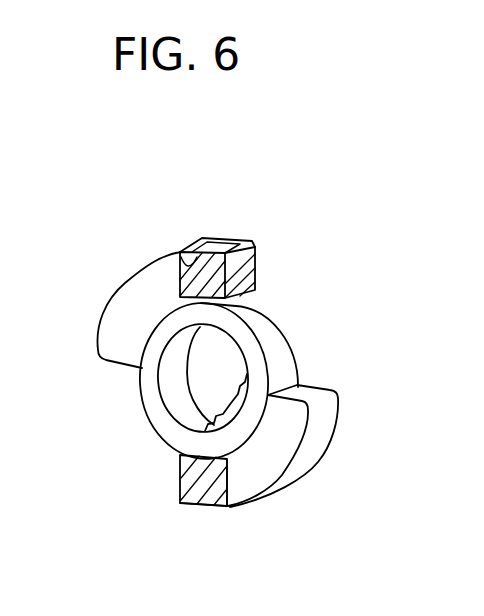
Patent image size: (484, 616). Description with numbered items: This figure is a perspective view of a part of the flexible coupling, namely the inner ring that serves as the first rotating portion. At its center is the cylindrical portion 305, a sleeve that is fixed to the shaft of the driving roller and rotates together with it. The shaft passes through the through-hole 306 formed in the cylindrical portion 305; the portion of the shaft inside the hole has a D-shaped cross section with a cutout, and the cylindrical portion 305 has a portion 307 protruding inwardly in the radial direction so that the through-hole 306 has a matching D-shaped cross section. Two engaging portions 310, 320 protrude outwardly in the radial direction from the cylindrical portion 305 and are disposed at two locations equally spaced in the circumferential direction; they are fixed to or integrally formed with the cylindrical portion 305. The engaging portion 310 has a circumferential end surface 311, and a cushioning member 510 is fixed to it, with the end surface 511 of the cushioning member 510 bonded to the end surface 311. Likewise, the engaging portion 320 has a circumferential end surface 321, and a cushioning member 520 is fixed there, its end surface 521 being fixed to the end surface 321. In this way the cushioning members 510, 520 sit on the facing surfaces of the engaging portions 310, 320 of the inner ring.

The cylindrical portion 305 is at (144, 390).
The through-hole 306 is at (177, 400).
The portion protruding inwardly 307 is at (228, 404).
The engaging portion 310 is at (118, 314).
The end surface 311 is at (206, 250).
The engaging portion 320 is at (283, 438).
The end surface 321 is at (218, 506).
The cushioning member 510 is at (222, 246).
The end surface 511 is at (178, 296).
The cushioning member 520 is at (183, 503).
The end surface 521 is at (227, 477).